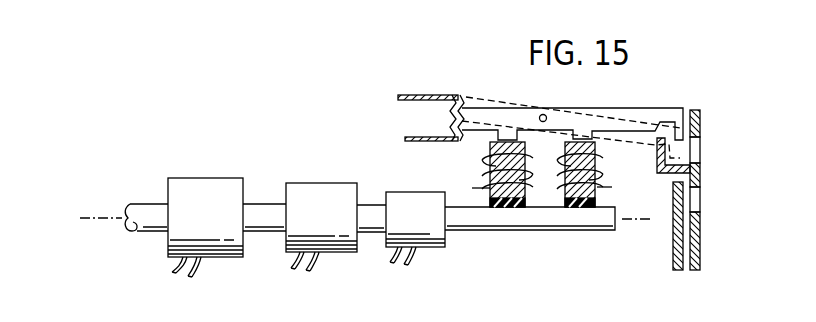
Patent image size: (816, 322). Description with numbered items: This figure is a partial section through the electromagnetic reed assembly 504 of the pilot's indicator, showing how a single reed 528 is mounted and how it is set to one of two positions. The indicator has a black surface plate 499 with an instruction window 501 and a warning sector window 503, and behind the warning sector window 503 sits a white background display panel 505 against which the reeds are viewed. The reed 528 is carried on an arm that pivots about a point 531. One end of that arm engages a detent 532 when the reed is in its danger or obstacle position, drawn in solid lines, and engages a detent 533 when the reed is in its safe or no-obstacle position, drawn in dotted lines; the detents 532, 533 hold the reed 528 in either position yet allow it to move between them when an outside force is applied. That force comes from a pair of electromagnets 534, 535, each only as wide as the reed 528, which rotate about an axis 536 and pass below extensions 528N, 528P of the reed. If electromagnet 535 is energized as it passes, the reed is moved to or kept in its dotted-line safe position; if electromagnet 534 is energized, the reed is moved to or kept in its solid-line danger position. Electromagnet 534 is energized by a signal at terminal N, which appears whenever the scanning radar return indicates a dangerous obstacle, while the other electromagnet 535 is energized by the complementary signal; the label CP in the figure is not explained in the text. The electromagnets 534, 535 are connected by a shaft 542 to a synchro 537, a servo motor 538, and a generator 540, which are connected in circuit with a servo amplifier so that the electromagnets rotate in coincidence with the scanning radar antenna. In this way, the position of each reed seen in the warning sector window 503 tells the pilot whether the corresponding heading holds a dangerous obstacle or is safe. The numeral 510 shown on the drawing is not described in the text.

The black surface plate 499 is at (700, 116).
The instruction window 501 is at (700, 204).
The warning sector window 503 is at (700, 152).
The electromagnetic reed assembly 504 is at (343, 168).
The white background display panel 505 is at (658, 158).
The plate 510 is at (676, 241).
The reed 528 is at (544, 114).
The extension of reed 528N is at (490, 145).
The extension of reed 528P is at (572, 170).
The pivot point 531 is at (547, 117).
The detent 532 is at (447, 121).
The detent 533 is at (446, 103).
The electromagnet 534 is at (498, 208).
The electromagnet 535 is at (597, 189).
The axis of rotation 536 is at (643, 221).
The synchro 537 is at (426, 228).
The servo motor 538 is at (333, 227).
The generator 540 is at (215, 231).
The shaft 542 is at (268, 222).
The terminal N is at (482, 156).
The coil P CP is at (596, 160).